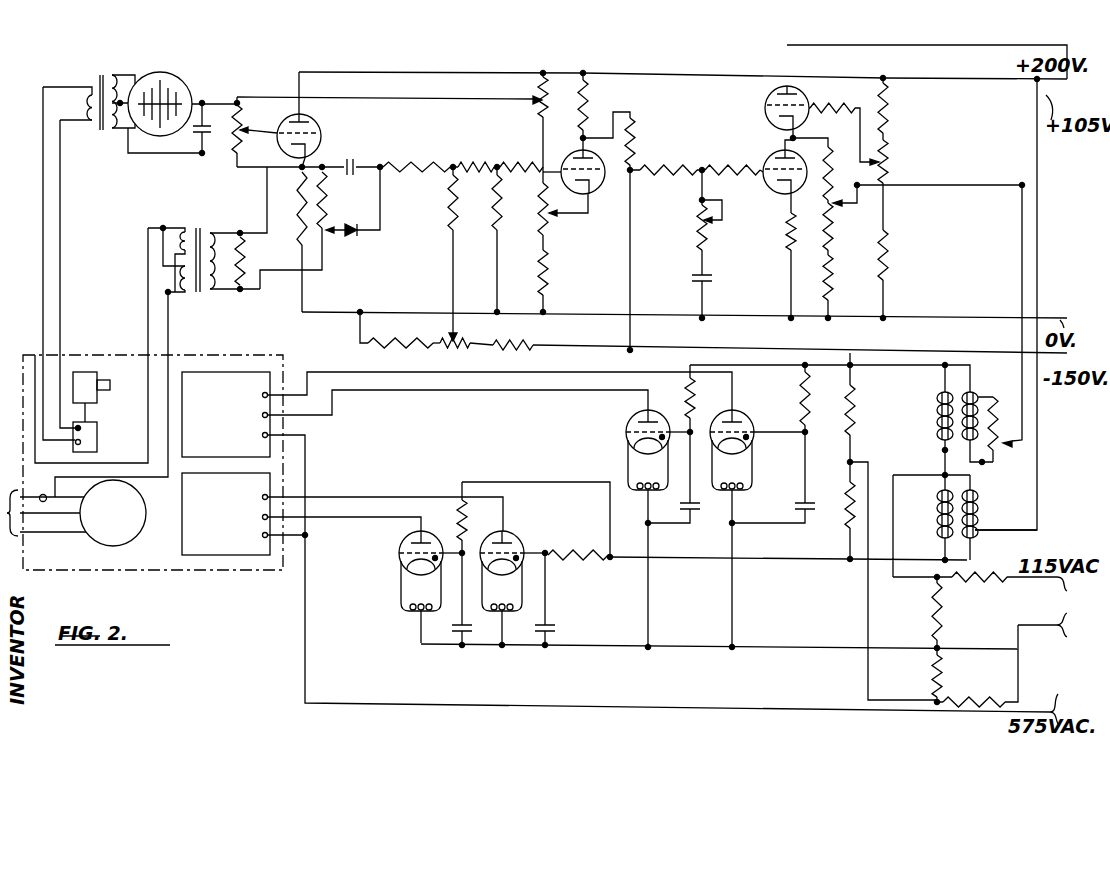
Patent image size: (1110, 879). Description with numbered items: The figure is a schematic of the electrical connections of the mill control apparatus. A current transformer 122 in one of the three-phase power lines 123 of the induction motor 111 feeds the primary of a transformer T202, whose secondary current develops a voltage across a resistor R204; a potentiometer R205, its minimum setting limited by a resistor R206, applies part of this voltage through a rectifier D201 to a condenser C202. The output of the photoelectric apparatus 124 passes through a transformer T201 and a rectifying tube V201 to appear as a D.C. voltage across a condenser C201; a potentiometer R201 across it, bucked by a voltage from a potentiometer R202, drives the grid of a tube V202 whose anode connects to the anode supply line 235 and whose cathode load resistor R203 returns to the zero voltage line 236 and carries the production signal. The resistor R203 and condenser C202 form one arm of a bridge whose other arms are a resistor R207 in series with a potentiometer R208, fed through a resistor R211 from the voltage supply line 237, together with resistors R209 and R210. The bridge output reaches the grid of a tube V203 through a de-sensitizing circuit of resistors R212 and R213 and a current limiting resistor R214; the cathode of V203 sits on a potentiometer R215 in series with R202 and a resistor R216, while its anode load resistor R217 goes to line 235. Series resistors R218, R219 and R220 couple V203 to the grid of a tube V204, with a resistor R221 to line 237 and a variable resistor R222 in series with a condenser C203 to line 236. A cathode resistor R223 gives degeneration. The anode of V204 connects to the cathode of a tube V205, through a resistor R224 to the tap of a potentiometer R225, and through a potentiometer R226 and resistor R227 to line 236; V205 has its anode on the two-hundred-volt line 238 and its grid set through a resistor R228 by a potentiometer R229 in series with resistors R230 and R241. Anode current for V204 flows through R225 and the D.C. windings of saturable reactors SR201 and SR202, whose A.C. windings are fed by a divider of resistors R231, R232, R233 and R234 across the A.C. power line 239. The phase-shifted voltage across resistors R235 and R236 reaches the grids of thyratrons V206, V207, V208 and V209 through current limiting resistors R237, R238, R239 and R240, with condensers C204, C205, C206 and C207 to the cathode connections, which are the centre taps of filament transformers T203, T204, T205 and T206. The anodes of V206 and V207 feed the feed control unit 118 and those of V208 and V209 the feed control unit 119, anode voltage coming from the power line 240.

The three-phase induction motor 111 is at (137, 489).
The feed control unit 118 is at (228, 372).
The feed control unit 119 is at (182, 535).
The current transformer 122 is at (45, 494).
The power lines 123 is at (46, 526).
The photoelectric apparatus 124 is at (97, 436).
The anode supply line 235 is at (360, 72).
The zero voltage line 236 is at (973, 318).
The voltage supply line 237 is at (990, 336).
The +200 volts line 238 is at (826, 45).
The A. C. power line 239 is at (1059, 624).
The power line 240 is at (1074, 690).
The transformer T201 is at (122, 101).
The transformer T202 is at (205, 220).
The filament transformer T203 is at (770, 501).
The filament transformer T204 is at (625, 479).
The filament transformer T205 is at (493, 616).
The filament transformer T206 is at (401, 612).
The rectifying tube V201 is at (188, 85).
The triode type vacuum tube V202 is at (320, 128).
The triode vacuum tube V203 is at (602, 196).
The triode type vacuum tube V204 is at (764, 192).
The triode type vacuum tube V205 is at (766, 102).
The thyratron type tube V206 is at (750, 447).
The thyratron type tube V207 is at (625, 423).
The thyratron type tube V208 is at (519, 547).
The thyratron type tube V209 is at (399, 545).
The condenser C201 is at (203, 138).
The condenser C202 is at (350, 159).
The condenser C203 is at (712, 282).
The condenser C204 is at (810, 511).
The condenser C205 is at (705, 511).
The condenser C206 is at (568, 631).
The condenser C207 is at (452, 636).
The rectifier D201 is at (362, 201).
The saturable reactor SR201 is at (940, 446).
The second saturable reactor SR202 is at (996, 526).
The potentiometer R201 is at (248, 143).
The potentiometer R202 is at (540, 91).
The cathode load resistor R203 is at (299, 187).
The resistor R204 is at (245, 256).
The potentiometer R205 is at (332, 239).
The resistor R206 is at (324, 230).
The resistor R207 is at (404, 333).
The potentiometer R208 is at (477, 333).
The resistor R209 is at (426, 254).
The resistor R210 is at (420, 164).
The resistor R211 is at (540, 334).
The resistor R212 is at (466, 164).
The resistor R213 is at (497, 231).
The current limiting resistor R214 is at (525, 163).
The potentiometer R215 is at (551, 233).
The resistor R216 is at (549, 281).
The anode load resistor R217 is at (590, 101).
The resistor R218 is at (637, 133).
The resistor R219 is at (650, 176).
The resistor R220 is at (715, 162).
The resistor R221 is at (702, 220).
The variable resistor R222 is at (708, 240).
The cathode resistor R223 is at (787, 250).
The resistor R224 is at (858, 132).
The potentiometer R225 is at (1014, 445).
The potentiometer R226 is at (855, 220).
The resistor R227 is at (856, 288).
The resistor R228 is at (844, 123).
The potentiometer R229 is at (892, 161).
The resistor R230 is at (890, 259).
The resistor R231 is at (980, 594).
The resistor R232 is at (933, 606).
The resistor R233 is at (932, 673).
The resistor R234 is at (975, 681).
The resistor R235 is at (856, 410).
The resistor R236 is at (846, 493).
The current limiting resistor R237 is at (781, 434).
The current limiting resistor R238 is at (688, 410).
The current limiting resistor R239 is at (552, 561).
The current limiting resistor R240 is at (472, 519).
The resistor R241 is at (892, 101).